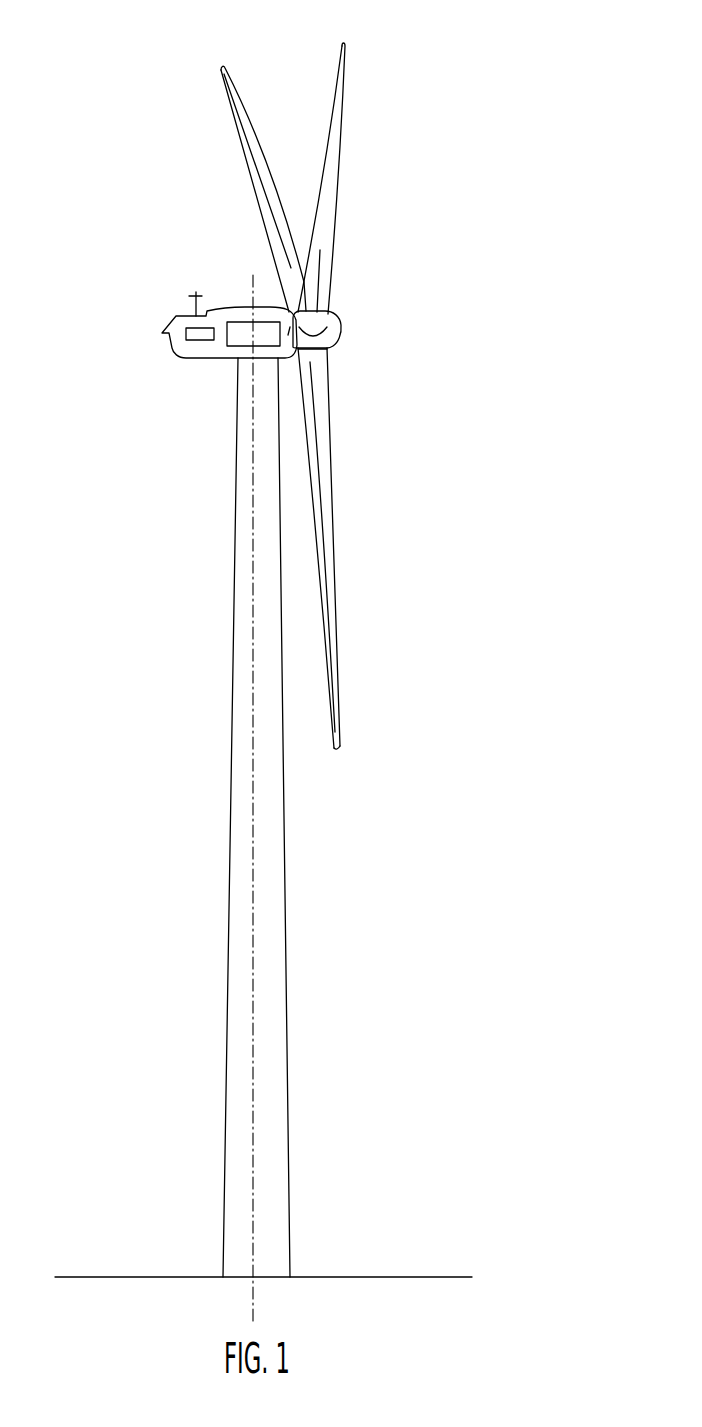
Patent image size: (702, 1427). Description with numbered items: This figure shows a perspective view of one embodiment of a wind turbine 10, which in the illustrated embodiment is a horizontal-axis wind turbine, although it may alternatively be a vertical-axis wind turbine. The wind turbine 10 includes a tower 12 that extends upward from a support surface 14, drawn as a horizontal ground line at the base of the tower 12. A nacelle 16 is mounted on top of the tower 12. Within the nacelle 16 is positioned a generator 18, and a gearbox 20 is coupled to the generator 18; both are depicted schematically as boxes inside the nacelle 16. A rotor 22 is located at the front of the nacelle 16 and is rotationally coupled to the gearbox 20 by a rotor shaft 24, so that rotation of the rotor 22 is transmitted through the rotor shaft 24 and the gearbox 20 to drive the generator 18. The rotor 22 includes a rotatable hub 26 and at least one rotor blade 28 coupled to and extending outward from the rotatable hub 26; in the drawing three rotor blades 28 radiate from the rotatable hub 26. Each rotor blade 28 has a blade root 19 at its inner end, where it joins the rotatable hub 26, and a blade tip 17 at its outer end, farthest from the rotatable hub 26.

The wind turbine 10 is at (494, 102).
The tower 12 is at (228, 958).
The support surface 14 is at (140, 1277).
The nacelle 16 is at (184, 358).
The blade tip 17 is at (340, 748).
The generator 18 is at (188, 327).
The blade root 19 is at (327, 370).
The gearbox 20 is at (235, 322).
The rotor 22 is at (348, 302).
The rotor shaft 24 is at (288, 335).
The rotatable hub 26 is at (339, 342).
The rotor blade 28 is at (242, 140).